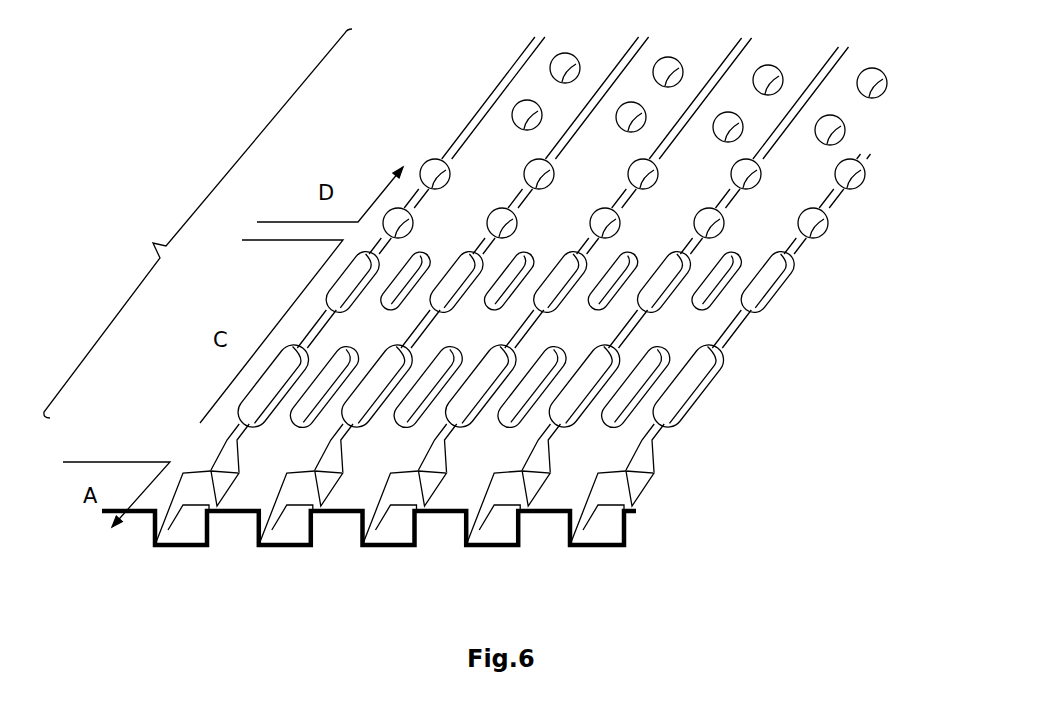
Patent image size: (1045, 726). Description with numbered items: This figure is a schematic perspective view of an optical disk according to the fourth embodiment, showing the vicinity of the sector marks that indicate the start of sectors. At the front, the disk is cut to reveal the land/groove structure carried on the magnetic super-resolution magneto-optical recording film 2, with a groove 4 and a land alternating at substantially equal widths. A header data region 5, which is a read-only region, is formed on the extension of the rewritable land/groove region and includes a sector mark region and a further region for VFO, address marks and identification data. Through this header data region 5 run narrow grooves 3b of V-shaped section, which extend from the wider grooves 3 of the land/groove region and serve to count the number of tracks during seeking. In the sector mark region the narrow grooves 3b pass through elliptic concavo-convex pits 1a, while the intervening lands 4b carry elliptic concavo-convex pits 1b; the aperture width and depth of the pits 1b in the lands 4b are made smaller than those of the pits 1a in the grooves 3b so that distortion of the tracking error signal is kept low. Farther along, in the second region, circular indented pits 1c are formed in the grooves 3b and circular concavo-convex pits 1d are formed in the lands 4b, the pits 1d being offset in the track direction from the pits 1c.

The concavo-convex pits 1a is at (707, 398).
The concavo-convex pits 1b is at (631, 423).
The indented pits 1c is at (818, 230).
The concavo-convex pits 1d is at (838, 137).
The magnetic super-resolution magneto-optical recording film 2 is at (272, 548).
The grooves 3 is at (383, 548).
The narrow grooves 3b is at (729, 345).
The groove 4 is at (547, 513).
The lands 4b is at (698, 320).
The header data region 5 is at (198, 223).